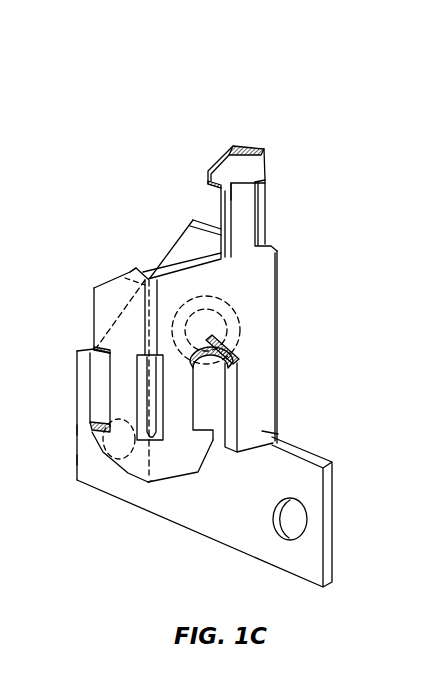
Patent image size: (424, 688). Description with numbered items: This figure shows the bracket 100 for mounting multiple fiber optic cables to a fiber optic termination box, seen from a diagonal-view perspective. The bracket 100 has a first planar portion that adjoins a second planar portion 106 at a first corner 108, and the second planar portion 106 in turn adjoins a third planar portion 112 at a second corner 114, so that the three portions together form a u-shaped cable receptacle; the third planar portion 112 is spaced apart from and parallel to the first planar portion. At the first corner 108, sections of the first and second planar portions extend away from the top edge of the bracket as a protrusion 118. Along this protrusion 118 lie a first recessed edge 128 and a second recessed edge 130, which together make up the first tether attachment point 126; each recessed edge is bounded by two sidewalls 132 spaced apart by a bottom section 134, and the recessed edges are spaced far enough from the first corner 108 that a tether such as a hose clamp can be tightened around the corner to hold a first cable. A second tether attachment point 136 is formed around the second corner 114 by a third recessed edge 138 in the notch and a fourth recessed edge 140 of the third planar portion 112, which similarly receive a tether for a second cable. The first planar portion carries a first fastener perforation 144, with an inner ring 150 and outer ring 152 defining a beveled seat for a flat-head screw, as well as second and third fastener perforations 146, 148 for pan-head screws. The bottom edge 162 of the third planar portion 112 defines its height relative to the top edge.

The bracket 100 is at (255, 106).
The second planar portion 106 is at (262, 431).
The first corner 108 is at (268, 163).
The third planar portion 112 is at (110, 313).
The second corner 114 is at (150, 470).
The protrusion 118 is at (278, 197).
The first tether attachment point 126 is at (147, 227).
The first recessed edge 128 is at (218, 212).
The second recessed edge 130 is at (229, 206).
The sidewalls 132 is at (94, 349).
The bottom section 134 is at (193, 400).
The second tether attachment point 136 is at (66, 429).
The third recessed edge 138 is at (193, 418).
The fourth recessed edge 140 is at (110, 407).
The first fastener perforation 144 is at (125, 278).
The second fastener perforation 146 is at (77, 461).
The third fastener perforation 148 is at (305, 524).
The inner ring 150 is at (230, 327).
The outer ring 152 is at (233, 340).
The bottom edge 162 is at (130, 477).